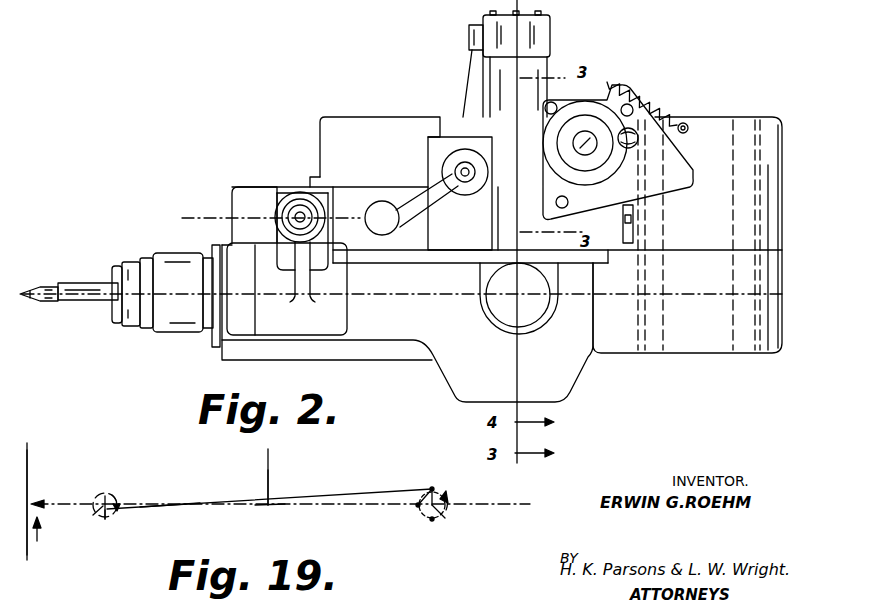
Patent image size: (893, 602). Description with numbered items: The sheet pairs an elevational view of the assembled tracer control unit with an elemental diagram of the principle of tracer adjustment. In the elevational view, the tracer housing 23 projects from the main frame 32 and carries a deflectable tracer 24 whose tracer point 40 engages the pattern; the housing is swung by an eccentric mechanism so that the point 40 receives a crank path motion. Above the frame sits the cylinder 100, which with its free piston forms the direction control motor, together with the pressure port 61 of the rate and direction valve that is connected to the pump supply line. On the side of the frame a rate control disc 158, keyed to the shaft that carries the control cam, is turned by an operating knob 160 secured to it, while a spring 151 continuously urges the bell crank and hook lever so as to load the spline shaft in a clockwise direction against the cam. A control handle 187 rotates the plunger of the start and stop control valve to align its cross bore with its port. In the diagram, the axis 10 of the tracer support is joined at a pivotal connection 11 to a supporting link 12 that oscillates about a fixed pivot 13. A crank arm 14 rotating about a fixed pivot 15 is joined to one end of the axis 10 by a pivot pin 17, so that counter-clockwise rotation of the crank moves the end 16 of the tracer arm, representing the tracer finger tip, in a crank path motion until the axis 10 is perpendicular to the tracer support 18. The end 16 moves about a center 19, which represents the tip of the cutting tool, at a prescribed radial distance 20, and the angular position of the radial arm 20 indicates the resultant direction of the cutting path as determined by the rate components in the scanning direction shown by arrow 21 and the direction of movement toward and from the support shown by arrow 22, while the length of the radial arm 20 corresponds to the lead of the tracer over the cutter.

In FIG. 2, the cylinder 100 is at (469, 40).
In FIG. 2, the pressure port 61 is at (550, 72).
In FIG. 2, the rate control disc 158 is at (590, 106).
In FIG. 2, the spring 151 is at (636, 98).
In FIG. 2, the operating knob 160 is at (636, 143).
In FIG. 2, the main frame 32 is at (250, 192).
In FIG. 2, the supporting link 12 is at (200, 215).
In FIG. 19, the supporting link 12 is at (270, 477).
In FIG. 2, the control handle 187 is at (444, 198).
In FIG. 2, the tracer housing 23 is at (143, 258).
In FIG. 2, the deflectable tracer 24 is at (68, 302).
In FIG. 2, the tracer point 40 is at (22, 291).
In FIG. 2, the axis of the tracer support 10 is at (95, 325).
In FIG. 19, the axis of the tracer support 10 is at (332, 497).
In FIG. 19, the tracer support 18 is at (29, 468).
In FIG. 19, the arrow 21 is at (40, 546).
In FIG. 19, the center 19 is at (110, 496).
In FIG. 19, the radial arm 20 is at (93, 515).
In FIG. 19, the end of the tracer arm 16 is at (105, 520).
In FIG. 19, the arrow 22 is at (194, 472).
In FIG. 19, the fixed pivot 13 is at (270, 452).
In FIG. 19, the pivotal connection 11 is at (266, 507).
In FIG. 19, the pivot pin 17 is at (430, 489).
In FIG. 19, the crank arm 14 is at (436, 497).
In FIG. 19, the fixed pivot 15 is at (440, 512).